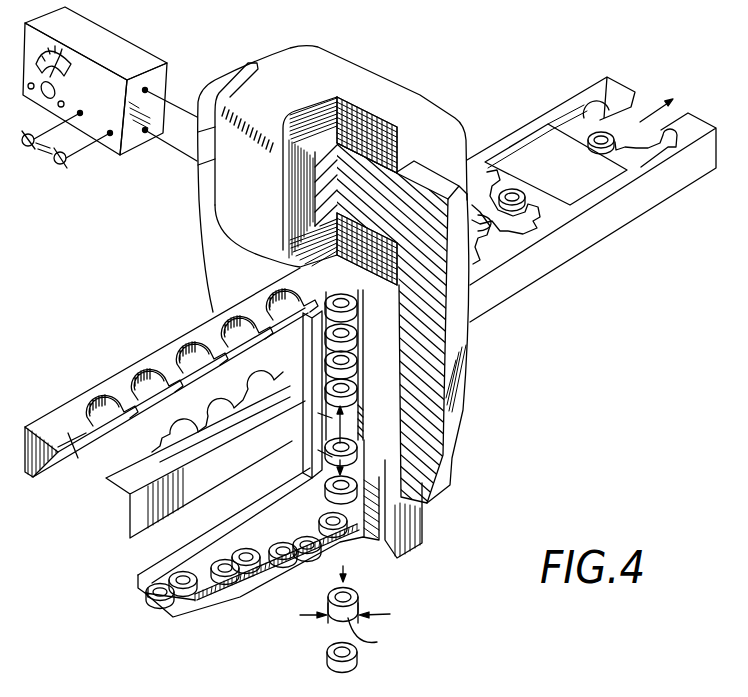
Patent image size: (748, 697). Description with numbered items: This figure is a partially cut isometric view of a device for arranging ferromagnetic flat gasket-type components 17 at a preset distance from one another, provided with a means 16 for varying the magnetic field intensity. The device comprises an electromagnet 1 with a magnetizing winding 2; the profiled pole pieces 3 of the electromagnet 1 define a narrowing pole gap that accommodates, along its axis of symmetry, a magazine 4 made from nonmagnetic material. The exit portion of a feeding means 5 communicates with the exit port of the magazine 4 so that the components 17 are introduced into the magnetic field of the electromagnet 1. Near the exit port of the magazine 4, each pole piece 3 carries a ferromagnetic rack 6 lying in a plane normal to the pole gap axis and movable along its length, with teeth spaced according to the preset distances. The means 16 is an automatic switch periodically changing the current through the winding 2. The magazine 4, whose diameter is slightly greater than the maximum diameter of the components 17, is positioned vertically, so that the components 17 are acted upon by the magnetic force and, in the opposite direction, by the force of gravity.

The electromagnet 1 is at (419, 71).
The magnetizing winding 2 is at (220, 189).
The pole pieces 3 is at (410, 538).
The magazine 4 is at (307, 347).
The feeding means 5 is at (143, 575).
The ferromagnetic rack 6 is at (115, 470).
The means for varying the magnetic field intensity 16 is at (147, 62).
The components 17 is at (602, 150).